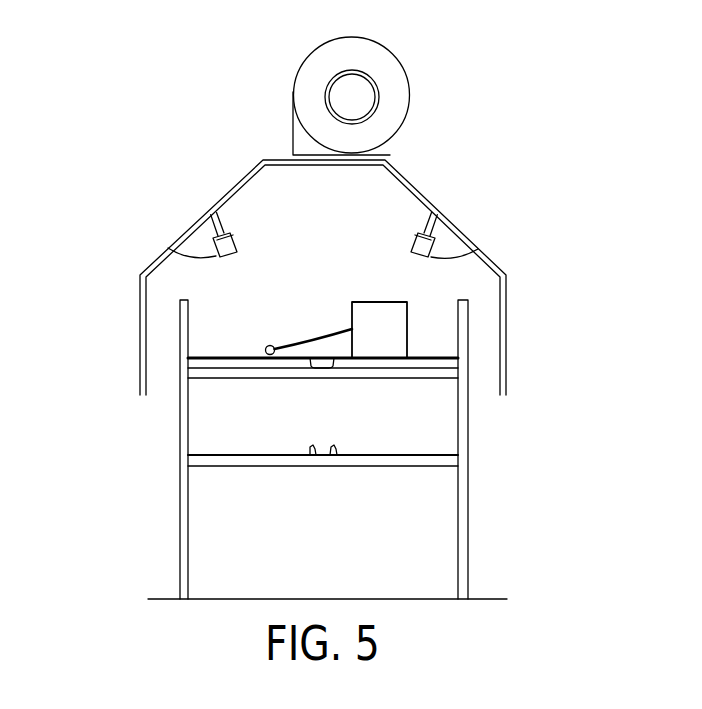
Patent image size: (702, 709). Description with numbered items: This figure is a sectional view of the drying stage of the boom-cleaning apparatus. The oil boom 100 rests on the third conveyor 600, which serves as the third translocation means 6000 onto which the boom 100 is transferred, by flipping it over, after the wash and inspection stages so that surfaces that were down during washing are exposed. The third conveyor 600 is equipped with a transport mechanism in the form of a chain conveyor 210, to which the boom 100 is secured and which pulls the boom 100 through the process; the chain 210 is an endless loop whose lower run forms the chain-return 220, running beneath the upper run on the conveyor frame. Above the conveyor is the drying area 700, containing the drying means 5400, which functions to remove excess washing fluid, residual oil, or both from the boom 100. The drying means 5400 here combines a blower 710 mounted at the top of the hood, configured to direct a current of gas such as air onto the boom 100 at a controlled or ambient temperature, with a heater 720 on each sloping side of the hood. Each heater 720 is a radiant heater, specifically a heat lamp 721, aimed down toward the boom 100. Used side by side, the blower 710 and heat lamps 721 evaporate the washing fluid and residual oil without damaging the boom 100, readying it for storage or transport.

The blower 710 is at (412, 92).
The drying area 700 is at (285, 258).
The drying means 5400 is at (176, 183).
The heater 720 is at (168, 248).
The heat lamp 721 is at (321, 246).
The third conveyor 600 is at (464, 448).
The third translocation means 6000 is at (379, 412).
The boom 100 is at (363, 320).
The chain conveyor 210 is at (318, 358).
The chain-return 220 is at (317, 443).